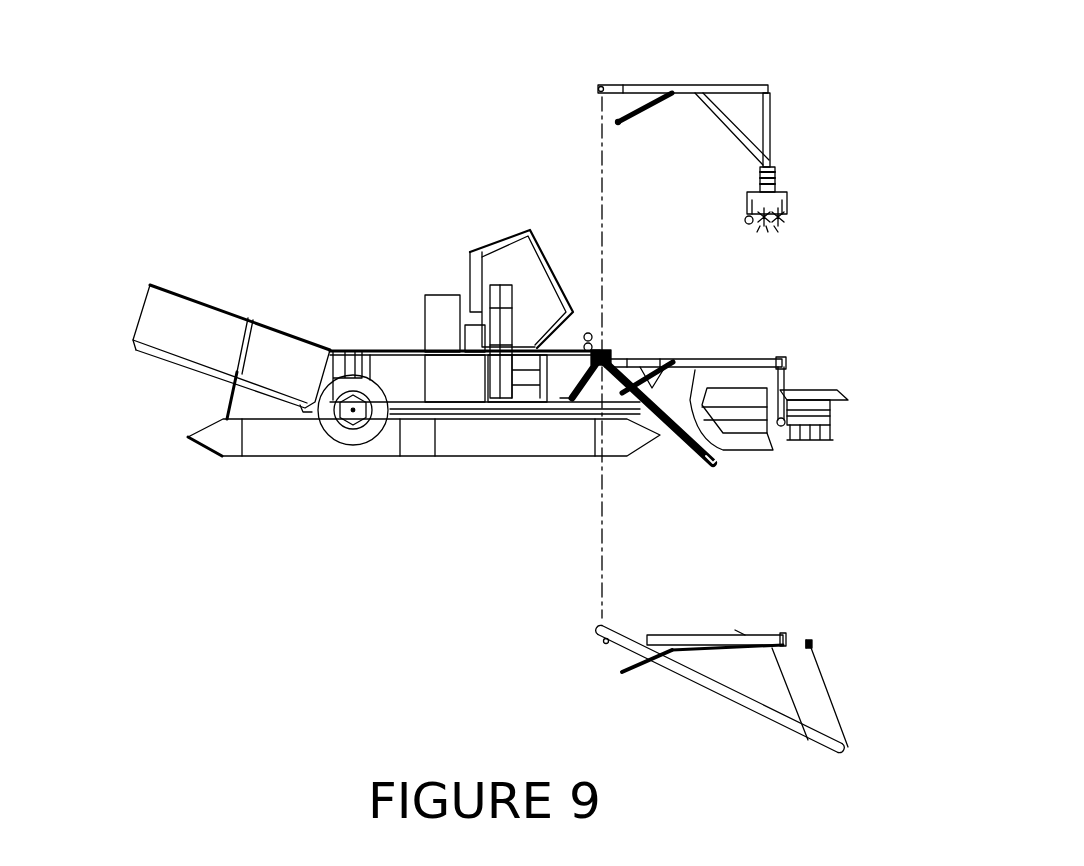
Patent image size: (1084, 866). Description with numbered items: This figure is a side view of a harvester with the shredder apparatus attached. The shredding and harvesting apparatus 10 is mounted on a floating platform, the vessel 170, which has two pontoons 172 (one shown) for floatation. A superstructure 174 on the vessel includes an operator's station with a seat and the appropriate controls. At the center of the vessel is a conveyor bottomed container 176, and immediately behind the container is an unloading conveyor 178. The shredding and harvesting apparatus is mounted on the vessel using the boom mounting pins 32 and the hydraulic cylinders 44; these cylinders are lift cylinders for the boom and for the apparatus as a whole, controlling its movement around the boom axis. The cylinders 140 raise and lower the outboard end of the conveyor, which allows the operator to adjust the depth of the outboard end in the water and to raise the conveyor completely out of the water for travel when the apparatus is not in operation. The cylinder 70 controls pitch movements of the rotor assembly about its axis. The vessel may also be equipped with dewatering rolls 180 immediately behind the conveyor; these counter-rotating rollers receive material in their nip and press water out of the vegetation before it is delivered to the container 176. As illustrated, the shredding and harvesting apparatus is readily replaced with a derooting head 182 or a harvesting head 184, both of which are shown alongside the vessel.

The aquatic plant harvesting apparatus 10 is at (802, 327).
The boom mounting pins 32 is at (605, 357).
The hydraulic cylinders 44 is at (643, 378).
The cylinder 70 is at (782, 386).
The cylinders 140 is at (683, 397).
The vessel 170 is at (353, 511).
The pontoons 172 is at (273, 438).
The superstructure 174 is at (496, 237).
The conveyor bottomed container 176 is at (460, 382).
The unloading conveyor 178 is at (200, 335).
The dewatering rolls 180 is at (585, 327).
The derooting head 182 is at (693, 87).
The harvesting head 184 is at (698, 677).